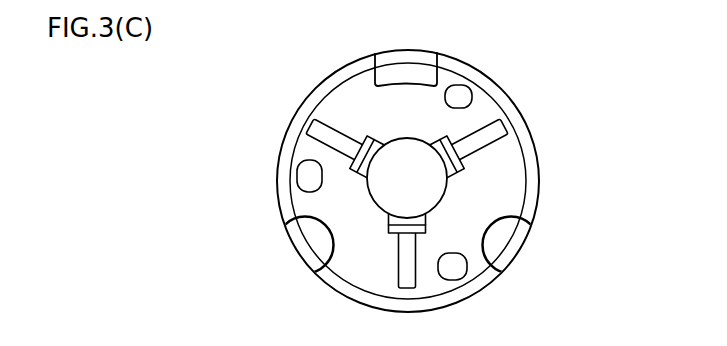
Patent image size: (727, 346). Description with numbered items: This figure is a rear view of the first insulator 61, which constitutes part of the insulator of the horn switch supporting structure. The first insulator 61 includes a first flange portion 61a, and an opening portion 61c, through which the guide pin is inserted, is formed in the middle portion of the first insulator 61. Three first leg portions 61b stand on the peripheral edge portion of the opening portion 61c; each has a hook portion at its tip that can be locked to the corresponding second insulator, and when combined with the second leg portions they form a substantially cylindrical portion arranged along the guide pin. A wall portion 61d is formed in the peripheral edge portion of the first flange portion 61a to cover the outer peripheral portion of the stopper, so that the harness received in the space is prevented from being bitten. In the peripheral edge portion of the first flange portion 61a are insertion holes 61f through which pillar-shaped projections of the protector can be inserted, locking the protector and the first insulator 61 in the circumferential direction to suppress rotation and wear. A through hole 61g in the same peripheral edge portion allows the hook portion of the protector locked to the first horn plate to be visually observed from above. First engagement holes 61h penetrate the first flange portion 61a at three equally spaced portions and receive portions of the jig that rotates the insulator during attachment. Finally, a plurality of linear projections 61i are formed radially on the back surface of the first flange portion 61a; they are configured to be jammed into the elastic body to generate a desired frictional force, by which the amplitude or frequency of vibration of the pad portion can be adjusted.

The first insulator 61 is at (400, 171).
The first flange portion 61a is at (394, 117).
The first leg portions 61b is at (353, 173).
The opening portion 61c is at (394, 185).
The wall portion 61d is at (285, 133).
The insertion holes 61f is at (310, 238).
The through hole 61g is at (406, 62).
The first engagement holes 61h is at (305, 174).
The linear projections 61i is at (325, 127).